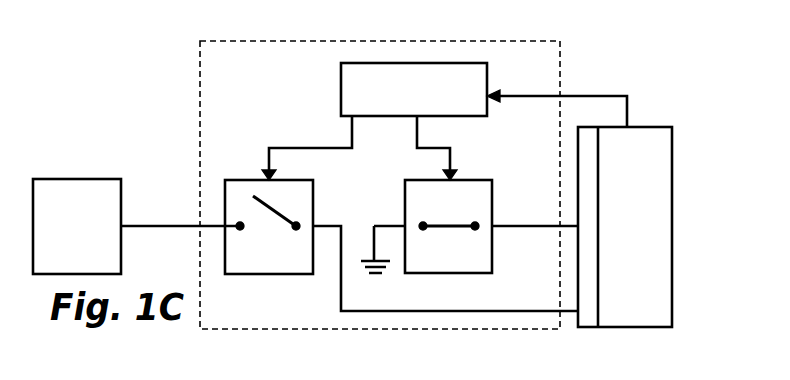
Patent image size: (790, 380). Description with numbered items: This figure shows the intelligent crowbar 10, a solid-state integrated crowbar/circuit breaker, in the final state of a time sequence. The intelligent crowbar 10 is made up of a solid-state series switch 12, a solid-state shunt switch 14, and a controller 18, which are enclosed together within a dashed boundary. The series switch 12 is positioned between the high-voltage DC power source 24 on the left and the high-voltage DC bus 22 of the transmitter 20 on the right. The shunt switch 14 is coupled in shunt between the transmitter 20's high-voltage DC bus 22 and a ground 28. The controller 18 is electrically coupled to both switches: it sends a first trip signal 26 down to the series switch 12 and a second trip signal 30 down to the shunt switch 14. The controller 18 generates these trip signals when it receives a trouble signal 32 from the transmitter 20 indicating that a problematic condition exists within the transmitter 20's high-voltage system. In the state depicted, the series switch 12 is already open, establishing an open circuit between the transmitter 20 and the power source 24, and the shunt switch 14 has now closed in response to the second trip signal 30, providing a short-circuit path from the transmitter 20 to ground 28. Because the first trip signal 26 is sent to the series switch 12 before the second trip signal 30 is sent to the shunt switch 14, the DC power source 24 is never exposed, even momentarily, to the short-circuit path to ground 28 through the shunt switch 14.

The intelligent crowbar 10 is at (200, 81).
The solid-state series switch 12 is at (313, 205).
The solid-state shunt switch 14 is at (492, 203).
The controller 18 is at (341, 86).
The transmitter 20 is at (672, 222).
The high-voltage DC bus 22 is at (598, 188).
The high-voltage DC power source 24 is at (85, 179).
The first trip signal 26 is at (269, 155).
The ground 28 is at (384, 278).
The second trip signal 30 is at (452, 162).
The trouble signal 32 is at (627, 112).